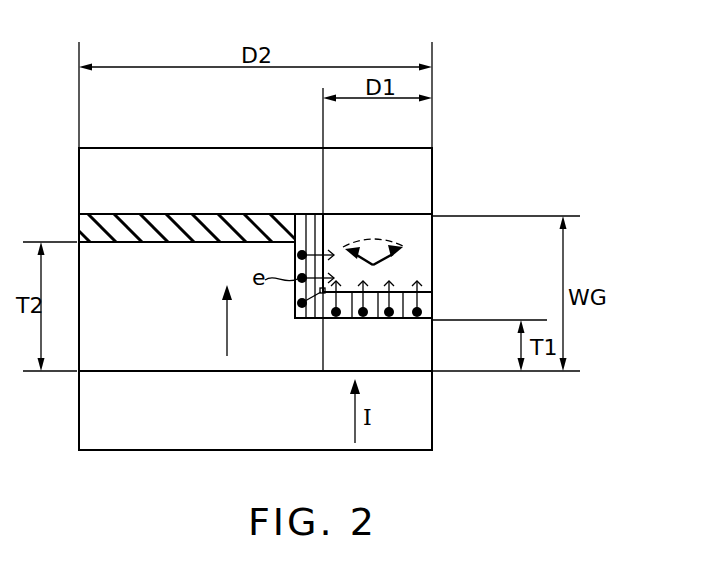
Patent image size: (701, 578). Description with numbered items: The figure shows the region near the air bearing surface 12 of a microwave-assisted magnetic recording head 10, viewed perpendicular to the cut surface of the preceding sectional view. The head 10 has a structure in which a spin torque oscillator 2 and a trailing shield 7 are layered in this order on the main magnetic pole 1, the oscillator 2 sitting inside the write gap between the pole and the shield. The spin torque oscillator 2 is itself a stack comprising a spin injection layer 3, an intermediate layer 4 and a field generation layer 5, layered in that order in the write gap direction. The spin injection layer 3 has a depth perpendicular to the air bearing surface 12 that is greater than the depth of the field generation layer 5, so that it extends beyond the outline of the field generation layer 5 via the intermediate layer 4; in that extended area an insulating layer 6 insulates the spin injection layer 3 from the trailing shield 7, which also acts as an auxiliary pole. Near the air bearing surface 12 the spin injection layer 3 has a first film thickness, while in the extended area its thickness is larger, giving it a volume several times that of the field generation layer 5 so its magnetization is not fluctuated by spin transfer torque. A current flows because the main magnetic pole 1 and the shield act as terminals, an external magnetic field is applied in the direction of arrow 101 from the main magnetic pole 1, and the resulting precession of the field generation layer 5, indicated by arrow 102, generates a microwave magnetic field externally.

The main magnetic pole 1 is at (424, 426).
The spin torque oscillator 2 is at (462, 243).
The spin injection layer 3 is at (424, 350).
The intermediate layer 4 is at (424, 307).
The field generation layer 5 is at (424, 264).
The insulating layer 6 is at (80, 224).
The trailing shield 7 is at (424, 163).
The microwave-assisted magnetic recording head 10 is at (493, 142).
The air bearing surface 12 is at (442, 229).
The arrow 101 is at (226, 327).
The arrow 102 is at (372, 262).